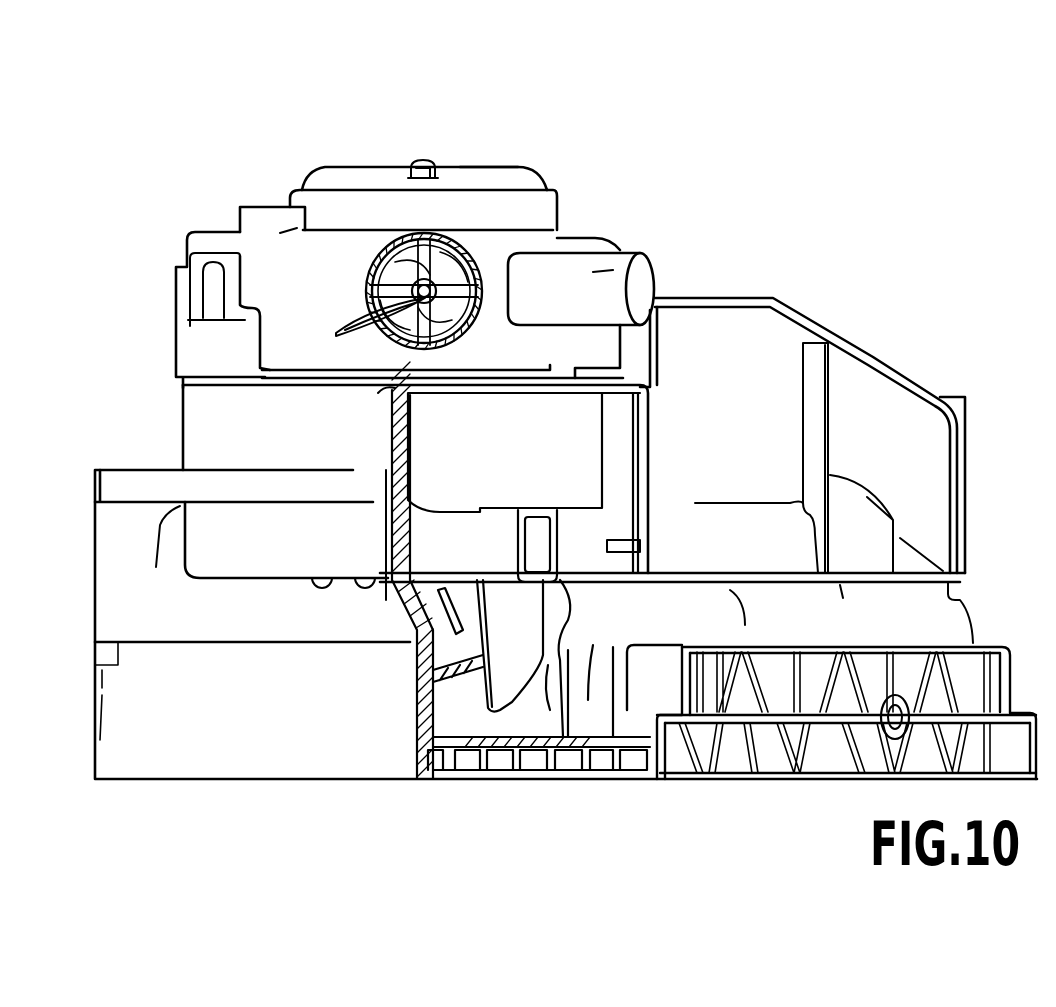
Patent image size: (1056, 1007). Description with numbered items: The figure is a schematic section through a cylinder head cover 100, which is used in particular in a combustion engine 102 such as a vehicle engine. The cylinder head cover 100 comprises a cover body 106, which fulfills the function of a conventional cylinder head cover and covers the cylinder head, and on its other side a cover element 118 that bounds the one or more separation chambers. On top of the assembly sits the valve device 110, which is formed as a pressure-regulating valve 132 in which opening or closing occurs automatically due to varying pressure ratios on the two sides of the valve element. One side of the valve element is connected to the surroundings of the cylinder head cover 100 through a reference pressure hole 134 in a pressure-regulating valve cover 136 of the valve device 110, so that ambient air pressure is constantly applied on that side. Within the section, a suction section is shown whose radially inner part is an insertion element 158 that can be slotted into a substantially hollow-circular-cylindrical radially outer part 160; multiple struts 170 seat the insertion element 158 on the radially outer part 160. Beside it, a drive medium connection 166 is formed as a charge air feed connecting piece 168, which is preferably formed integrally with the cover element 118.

The cylinder head cover 100 is at (767, 161).
The combustion engine 102 is at (866, 196).
The cover body 106 is at (886, 314).
The valve device 110 is at (348, 153).
The cover element 118 is at (270, 207).
The pressure-regulating valve 132 is at (378, 153).
The reference pressure hole 134 is at (428, 160).
The pressure-regulating valve cover 136 is at (483, 165).
The insertion element 158 is at (448, 260).
The radially outer part 160 is at (368, 287).
The drive medium connection 166 is at (620, 265).
The charge air feed connecting piece 168 is at (593, 270).
The struts 170 is at (340, 332).